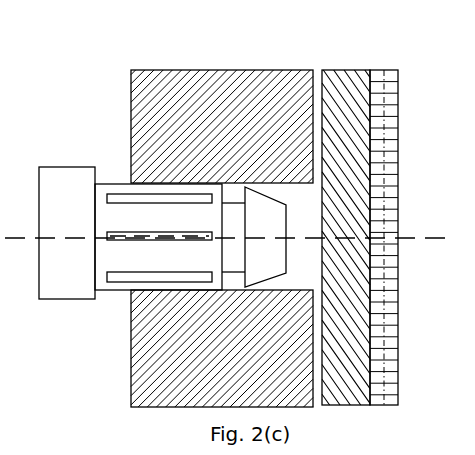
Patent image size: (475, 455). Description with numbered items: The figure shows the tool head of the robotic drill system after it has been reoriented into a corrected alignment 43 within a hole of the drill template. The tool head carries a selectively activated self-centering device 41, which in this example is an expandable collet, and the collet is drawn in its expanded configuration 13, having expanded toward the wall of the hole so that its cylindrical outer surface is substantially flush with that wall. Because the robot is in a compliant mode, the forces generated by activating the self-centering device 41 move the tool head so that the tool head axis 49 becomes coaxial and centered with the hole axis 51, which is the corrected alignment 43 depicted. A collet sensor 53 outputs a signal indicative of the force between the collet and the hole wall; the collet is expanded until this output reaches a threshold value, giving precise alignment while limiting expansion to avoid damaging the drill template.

The expanded configuration 13 is at (201, 263).
The self-centering device 41 is at (133, 258).
The corrected alignment 43 is at (113, 132).
The tool head axis 49 is at (420, 236).
The hole axis 51 is at (314, 236).
The collet sensor 53 is at (174, 193).